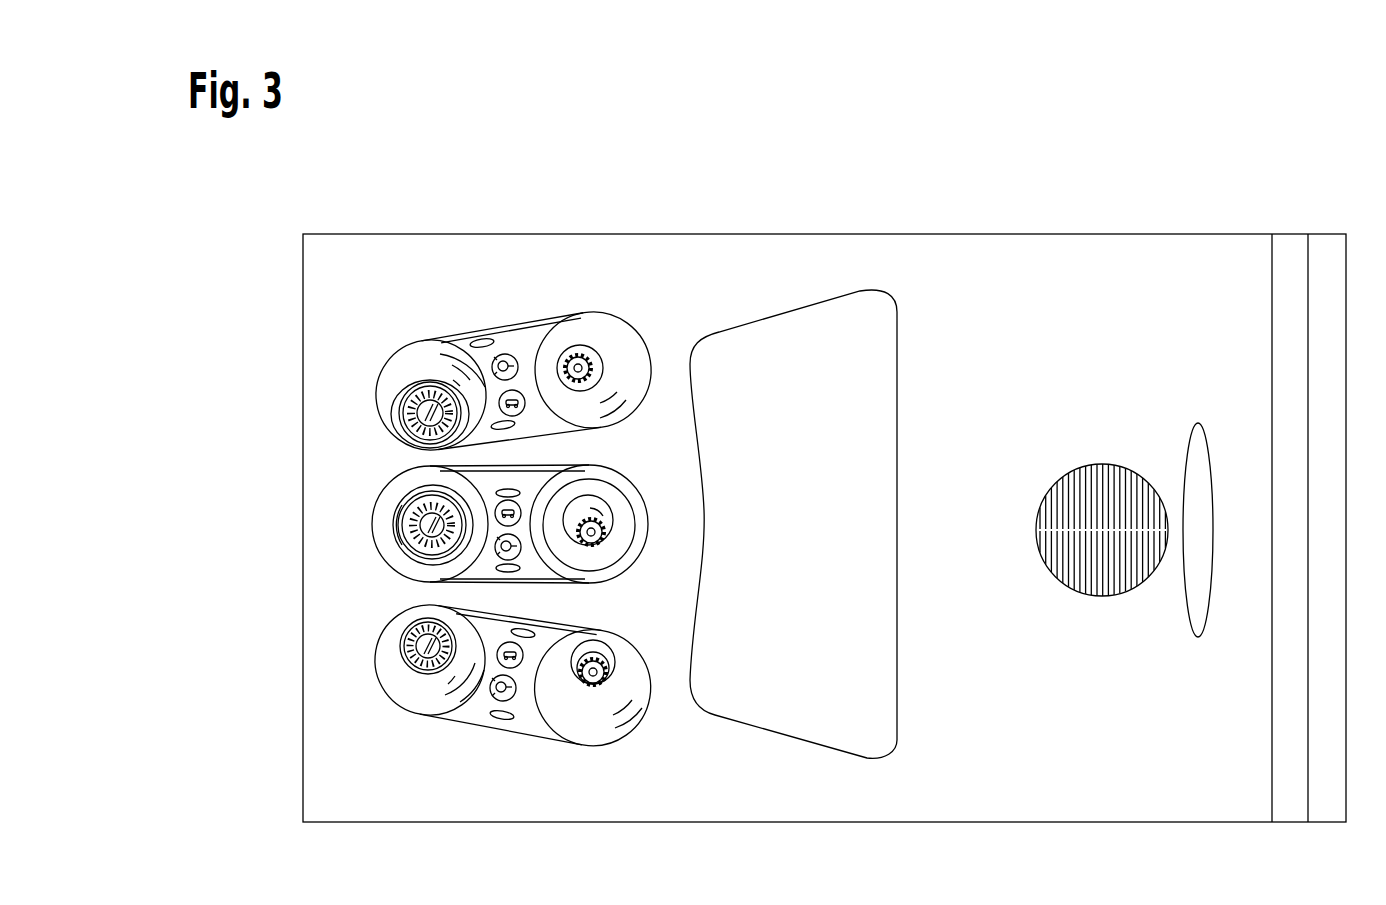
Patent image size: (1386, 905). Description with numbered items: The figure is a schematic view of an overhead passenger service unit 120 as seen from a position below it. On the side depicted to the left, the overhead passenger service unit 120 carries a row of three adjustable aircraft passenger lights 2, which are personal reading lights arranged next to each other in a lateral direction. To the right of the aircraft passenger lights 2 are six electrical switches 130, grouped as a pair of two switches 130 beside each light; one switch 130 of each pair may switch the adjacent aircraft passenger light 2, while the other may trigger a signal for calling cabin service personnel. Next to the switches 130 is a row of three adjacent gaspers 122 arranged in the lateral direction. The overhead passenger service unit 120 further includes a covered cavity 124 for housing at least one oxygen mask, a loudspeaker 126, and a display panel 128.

The aircraft passenger light 2 is at (413, 377).
The overhead passenger service unit 120 is at (1205, 209).
The gasper 122 is at (603, 351).
The covered cavity 124 is at (862, 404).
The loudspeaker 126 is at (1101, 461).
The display panel 128 is at (1213, 460).
The electrical switch 130 is at (500, 353).